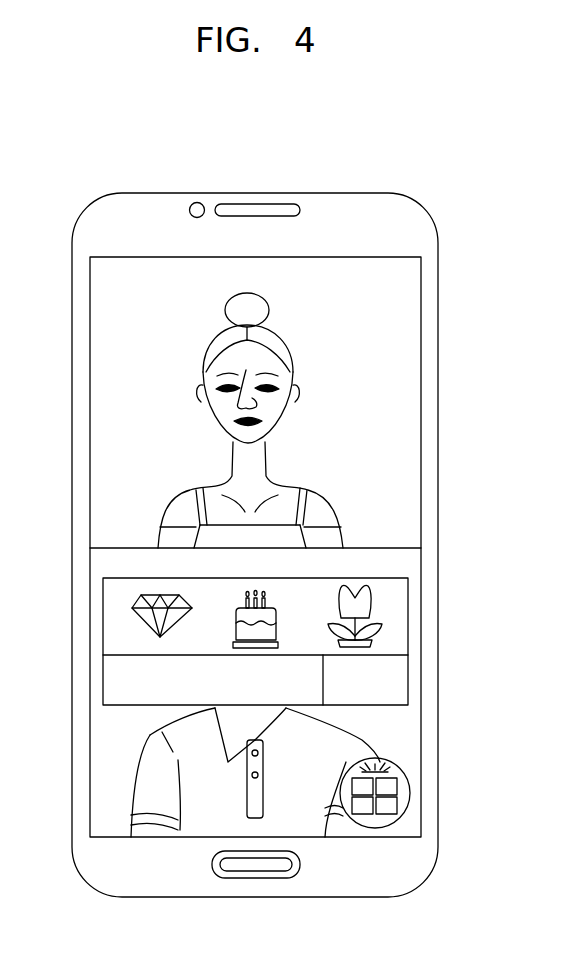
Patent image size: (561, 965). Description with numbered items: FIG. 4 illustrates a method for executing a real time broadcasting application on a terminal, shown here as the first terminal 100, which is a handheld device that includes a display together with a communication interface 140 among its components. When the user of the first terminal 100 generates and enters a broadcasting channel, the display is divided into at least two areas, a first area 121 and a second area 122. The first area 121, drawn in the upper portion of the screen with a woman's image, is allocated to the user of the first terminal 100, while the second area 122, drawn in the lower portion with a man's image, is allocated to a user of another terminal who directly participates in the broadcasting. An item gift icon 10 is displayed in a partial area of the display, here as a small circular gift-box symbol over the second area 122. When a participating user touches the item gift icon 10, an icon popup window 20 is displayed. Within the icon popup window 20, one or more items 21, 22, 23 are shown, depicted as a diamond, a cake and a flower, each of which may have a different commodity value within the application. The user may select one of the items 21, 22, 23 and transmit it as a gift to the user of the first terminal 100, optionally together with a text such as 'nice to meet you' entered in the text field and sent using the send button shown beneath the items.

The first terminal 100 is at (438, 284).
The communication interface 140 is at (421, 326).
The first area 121 is at (421, 404).
The second area 122 is at (410, 741).
The icon popup window 20 is at (408, 596).
The item 21 is at (132, 600).
The item 22 is at (236, 632).
The item 23 is at (378, 630).
The item gift icon 10 is at (410, 793).